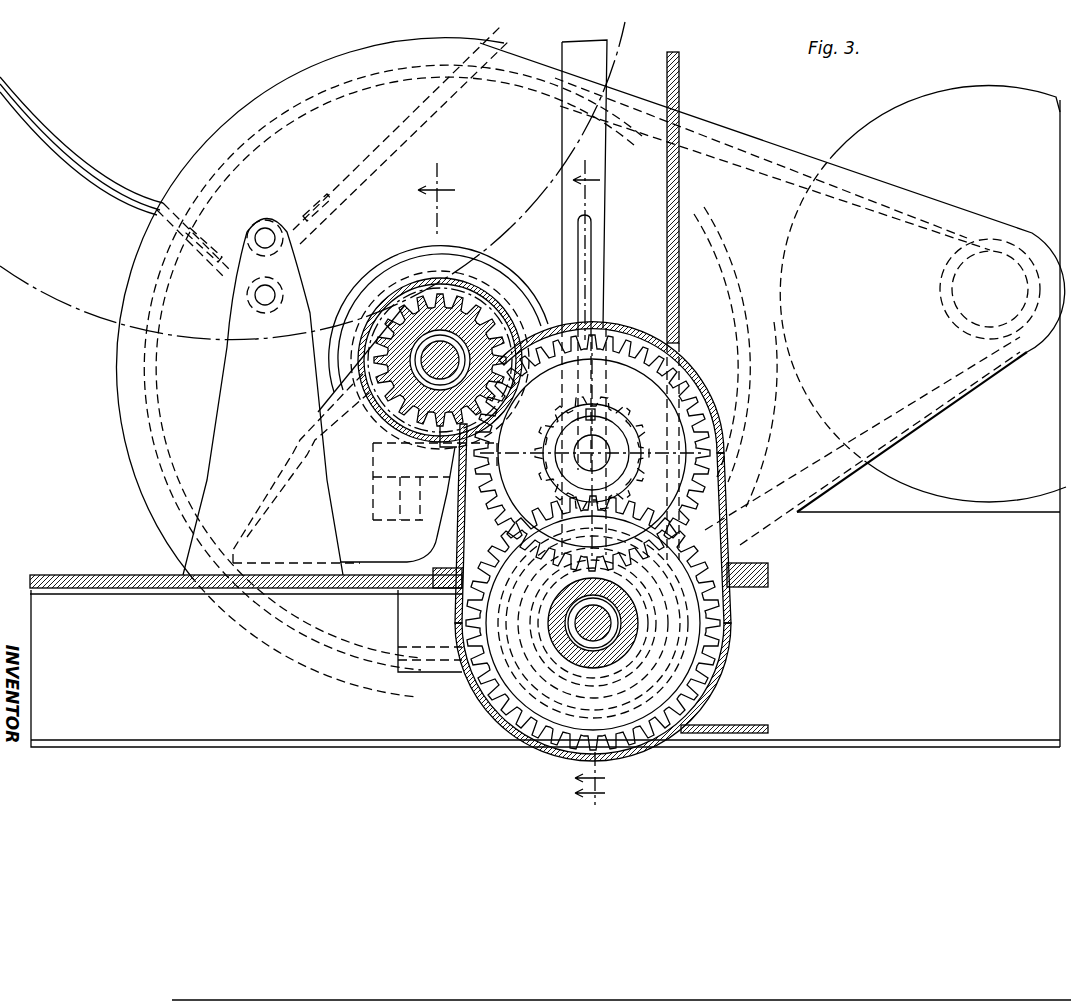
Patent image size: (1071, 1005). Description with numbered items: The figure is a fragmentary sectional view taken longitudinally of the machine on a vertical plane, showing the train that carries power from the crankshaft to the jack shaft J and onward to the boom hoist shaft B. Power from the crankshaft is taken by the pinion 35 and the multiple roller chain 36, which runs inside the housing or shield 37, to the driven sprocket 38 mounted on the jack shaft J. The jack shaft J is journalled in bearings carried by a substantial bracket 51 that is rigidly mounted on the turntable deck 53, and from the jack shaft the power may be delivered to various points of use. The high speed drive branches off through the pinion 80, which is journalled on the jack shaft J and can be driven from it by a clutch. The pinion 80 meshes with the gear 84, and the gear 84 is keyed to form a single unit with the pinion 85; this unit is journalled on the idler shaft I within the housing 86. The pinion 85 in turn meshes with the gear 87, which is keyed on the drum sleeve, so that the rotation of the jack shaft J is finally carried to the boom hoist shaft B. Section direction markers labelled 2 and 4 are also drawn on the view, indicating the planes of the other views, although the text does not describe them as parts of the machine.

The section line of Fig. 2 is at (520, 483).
The section line of Fig. 4 is at (592, 422).
The pinion 35 is at (952, 287).
The multiple roller chain 36 is at (772, 160).
The housing or shield 37 is at (725, 122).
The driven sprocket 38 is at (703, 214).
The bracket 51 is at (276, 486).
The turntable deck 53 is at (122, 573).
The pinion 80 is at (445, 300).
The gear 84 is at (626, 320).
The pinion 85 is at (620, 416).
The housing 86 is at (728, 480).
The gear 87 is at (693, 690).
The boom hoist shaft B is at (633, 652).
The idler shaft I is at (607, 447).
The jack shaft J is at (428, 350).